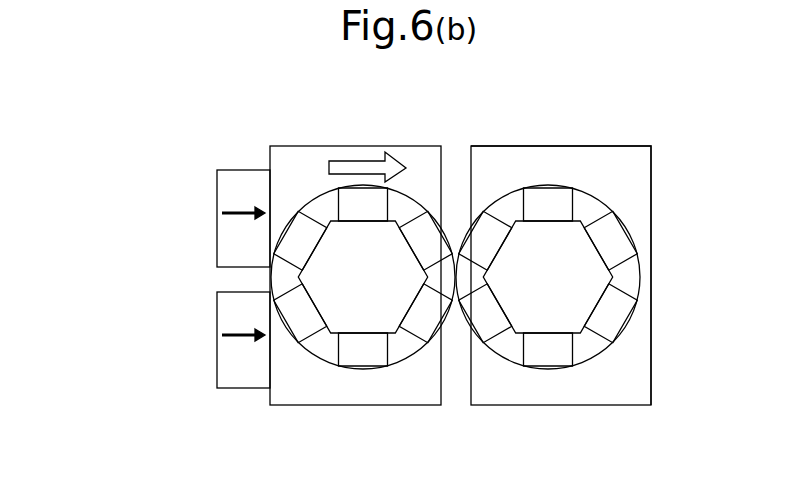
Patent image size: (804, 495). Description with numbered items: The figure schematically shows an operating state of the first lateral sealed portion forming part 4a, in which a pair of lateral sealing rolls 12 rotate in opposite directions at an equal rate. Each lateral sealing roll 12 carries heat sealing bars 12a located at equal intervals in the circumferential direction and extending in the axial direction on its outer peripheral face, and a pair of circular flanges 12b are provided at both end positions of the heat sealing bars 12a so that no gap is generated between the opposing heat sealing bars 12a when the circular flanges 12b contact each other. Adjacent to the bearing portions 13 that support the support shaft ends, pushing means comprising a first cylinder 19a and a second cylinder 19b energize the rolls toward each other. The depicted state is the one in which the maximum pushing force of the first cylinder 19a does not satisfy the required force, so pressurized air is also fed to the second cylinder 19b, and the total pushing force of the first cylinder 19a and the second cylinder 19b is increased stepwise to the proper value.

The bearing portion 13 is at (308, 147).
The lateral sealing roll 12 is at (418, 198).
The heat sealing bar 12a is at (363, 184).
The circular flange 12b is at (412, 357).
The first lateral sealed portion forming part 4a is at (615, 138).
The first cylinder 19a is at (217, 193).
The second cylinder 19b is at (217, 327).